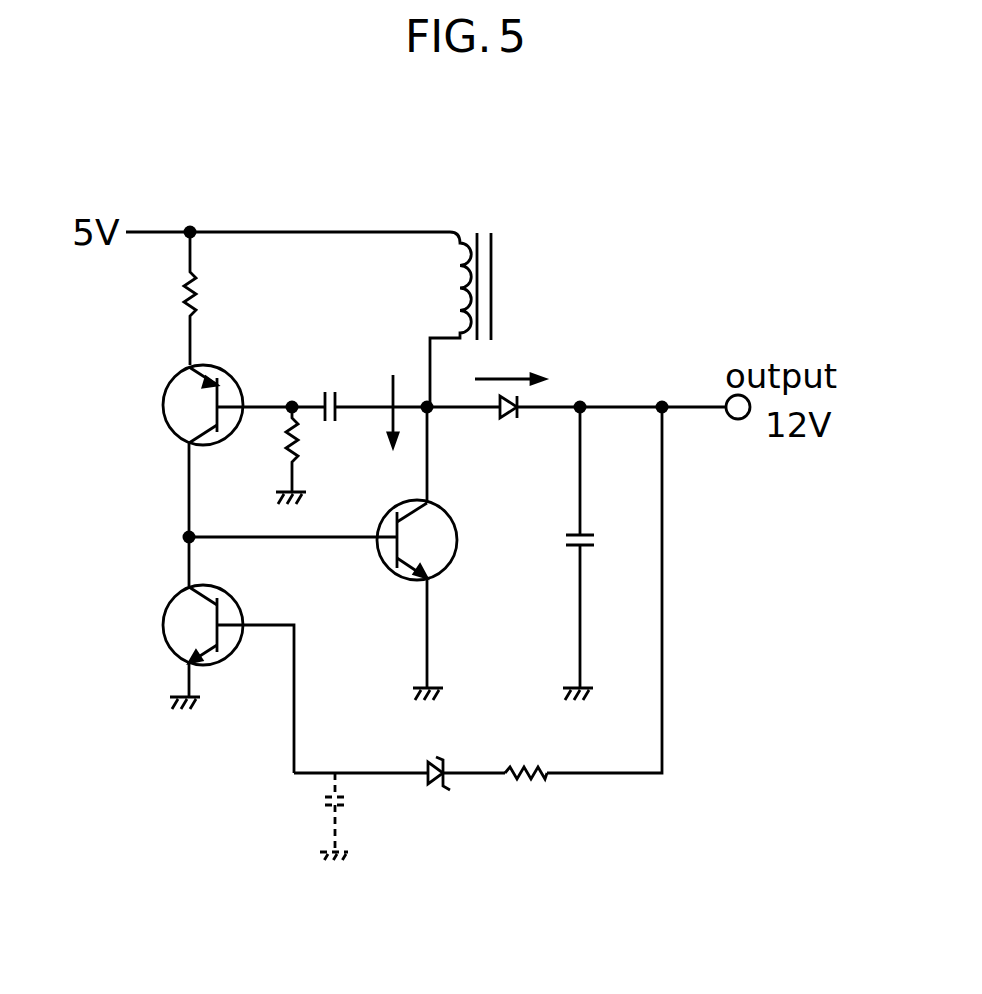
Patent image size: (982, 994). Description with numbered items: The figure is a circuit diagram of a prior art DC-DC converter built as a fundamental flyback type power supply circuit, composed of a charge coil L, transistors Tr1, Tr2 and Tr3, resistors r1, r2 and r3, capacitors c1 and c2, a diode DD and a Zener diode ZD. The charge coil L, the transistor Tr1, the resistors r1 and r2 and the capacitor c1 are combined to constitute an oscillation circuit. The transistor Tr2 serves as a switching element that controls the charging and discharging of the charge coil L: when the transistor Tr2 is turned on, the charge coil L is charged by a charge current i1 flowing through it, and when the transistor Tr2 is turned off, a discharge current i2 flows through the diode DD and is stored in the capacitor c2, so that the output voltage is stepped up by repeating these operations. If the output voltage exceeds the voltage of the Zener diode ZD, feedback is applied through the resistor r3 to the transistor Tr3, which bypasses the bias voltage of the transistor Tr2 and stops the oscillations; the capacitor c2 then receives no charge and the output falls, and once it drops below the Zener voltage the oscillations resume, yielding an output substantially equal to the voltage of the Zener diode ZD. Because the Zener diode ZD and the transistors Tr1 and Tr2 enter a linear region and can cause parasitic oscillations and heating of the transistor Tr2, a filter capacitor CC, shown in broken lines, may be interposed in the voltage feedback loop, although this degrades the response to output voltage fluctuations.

The resistor r1 is at (163, 298).
The resistor r2 is at (275, 455).
The resistor r3 is at (530, 797).
The capacitor c1 is at (357, 389).
The capacitor c2 is at (603, 553).
The transistor Tr1 is at (191, 405).
The transistor Tr2 is at (356, 553).
The transistor Tr3 is at (193, 608).
The charge coil L is at (451, 319).
The diode DD is at (544, 436).
The Zener diode ZD is at (447, 799).
The capacitor for a filter CC is at (303, 818).
The charge current i1 is at (401, 393).
The discharge current i2 is at (510, 362).